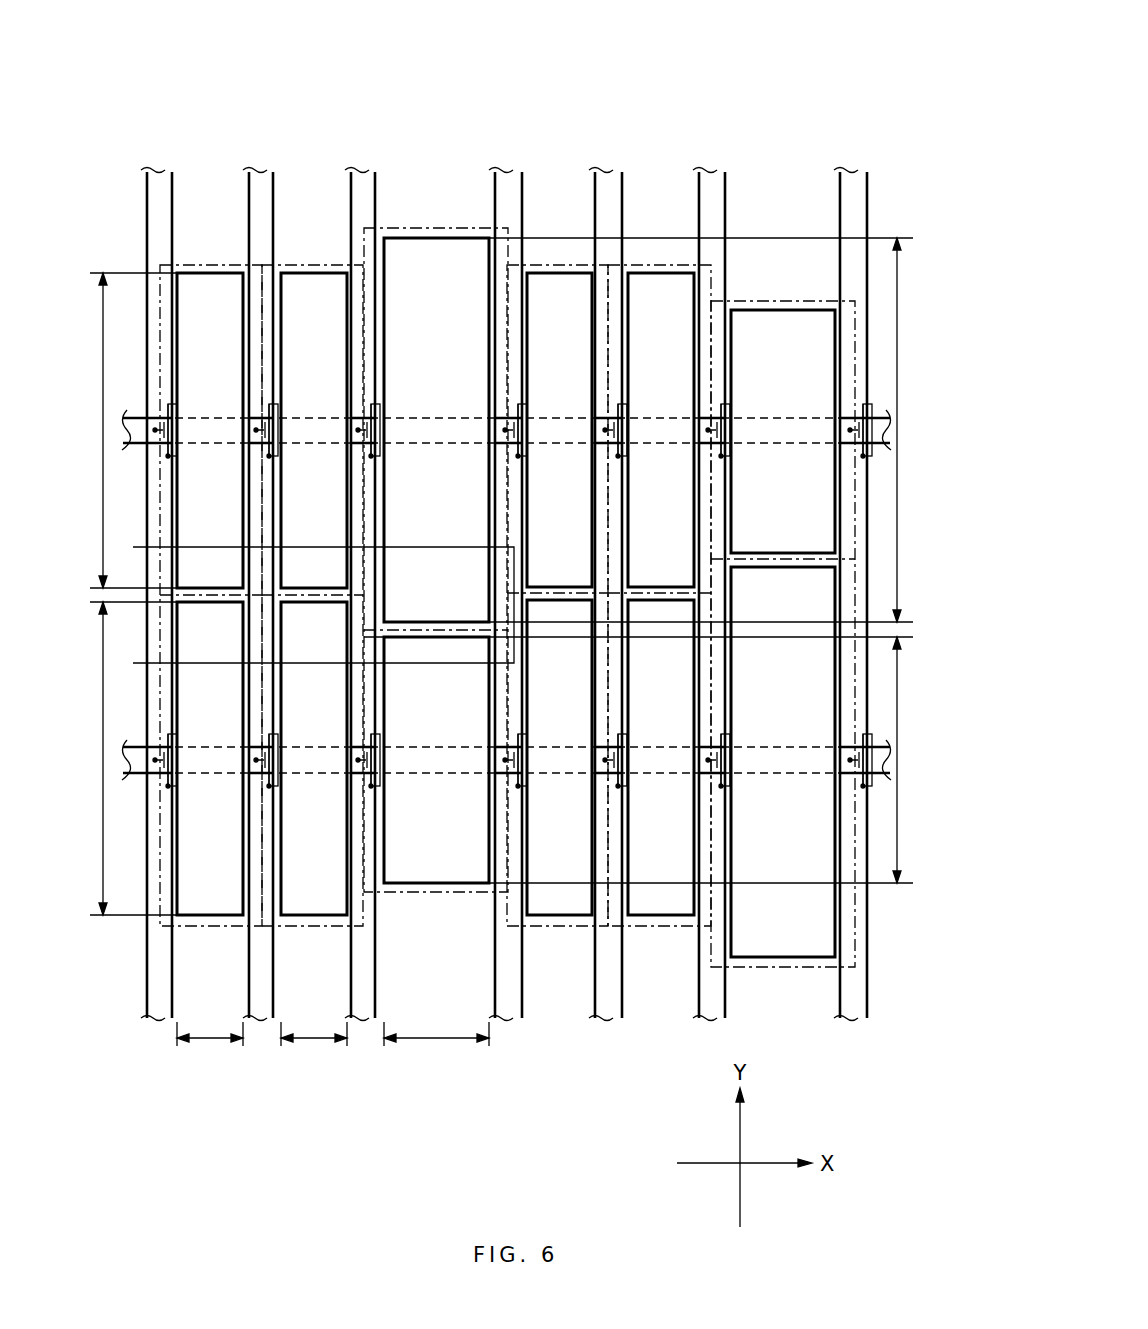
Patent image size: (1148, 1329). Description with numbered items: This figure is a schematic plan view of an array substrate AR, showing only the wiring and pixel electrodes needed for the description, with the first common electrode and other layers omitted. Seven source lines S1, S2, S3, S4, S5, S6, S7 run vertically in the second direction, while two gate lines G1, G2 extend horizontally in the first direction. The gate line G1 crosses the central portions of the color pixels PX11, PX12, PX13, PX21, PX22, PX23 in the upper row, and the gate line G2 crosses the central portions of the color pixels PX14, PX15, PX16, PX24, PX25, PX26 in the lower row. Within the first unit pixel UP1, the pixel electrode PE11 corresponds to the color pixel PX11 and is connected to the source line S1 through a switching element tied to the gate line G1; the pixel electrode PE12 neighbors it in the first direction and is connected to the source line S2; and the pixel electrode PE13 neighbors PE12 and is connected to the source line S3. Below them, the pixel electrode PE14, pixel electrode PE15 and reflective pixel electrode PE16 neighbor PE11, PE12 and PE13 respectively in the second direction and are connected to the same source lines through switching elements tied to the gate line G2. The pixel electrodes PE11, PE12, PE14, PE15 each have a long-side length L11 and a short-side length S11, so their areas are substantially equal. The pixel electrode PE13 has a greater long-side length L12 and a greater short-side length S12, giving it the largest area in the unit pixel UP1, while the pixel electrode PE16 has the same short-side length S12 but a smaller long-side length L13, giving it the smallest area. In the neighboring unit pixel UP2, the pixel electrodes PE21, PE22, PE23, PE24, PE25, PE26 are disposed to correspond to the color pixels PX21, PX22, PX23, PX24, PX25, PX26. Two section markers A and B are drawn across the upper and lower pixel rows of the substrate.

The array substrate AR is at (852, 73).
The source line S1 is at (159, 178).
The source line S2 is at (261, 178).
The source line S3 is at (363, 178).
The source line S4 is at (508, 178).
The source line S5 is at (608, 178).
The source line S6 is at (712, 178).
The source line S7 is at (853, 178).
The gate line G1 is at (128, 417).
The gate line G2 is at (128, 744).
The pixel electrode (first transmissive electrode) PE11 is at (212, 270).
The pixel electrode (second transmissive electrode) PE12 is at (315, 270).
The pixel electrode (third transmissive electrode) PE13 is at (438, 236).
The pixel electrode (fourth transmissive electrode) PE14 is at (213, 917).
The pixel electrode (fifth transmissive electrode) PE15 is at (316, 917).
The pixel electrode (reflective electrode) PE16 is at (437, 885).
The pixel electrode PE21 is at (533, 288).
The pixel electrode PE22 is at (631, 288).
The pixel electrode PE23 is at (788, 308).
The pixel electrode PE24 is at (556, 917).
The pixel electrode PE25 is at (664, 917).
The pixel electrode PE26 is at (784, 960).
The color pixel PX11 is at (210, 397).
The color pixel PX12 is at (314, 397).
The color pixel PX13 is at (436, 396).
The color pixel PX14 is at (210, 787).
The color pixel PX15 is at (314, 787).
The color pixel PX16 is at (436, 787).
The color pixel PX21 is at (560, 411).
The color pixel PX22 is at (661, 411).
The color pixel PX23 is at (783, 396).
The color pixel PX24 is at (559, 786).
The color pixel PX25 is at (661, 786).
The color pixel PX26 is at (783, 790).
The unit pixel UP1 is at (165, 925).
The unit pixel UP2 is at (857, 960).
The long-side length L11 is at (120, 594).
The long-side length L12 is at (714, 430).
The long-side length L13 is at (651, 760).
The short-side length S11 is at (262, 1046).
The short-side length S12 is at (436, 1046).
The section line A is at (314, 570).
The section line B is at (314, 640).